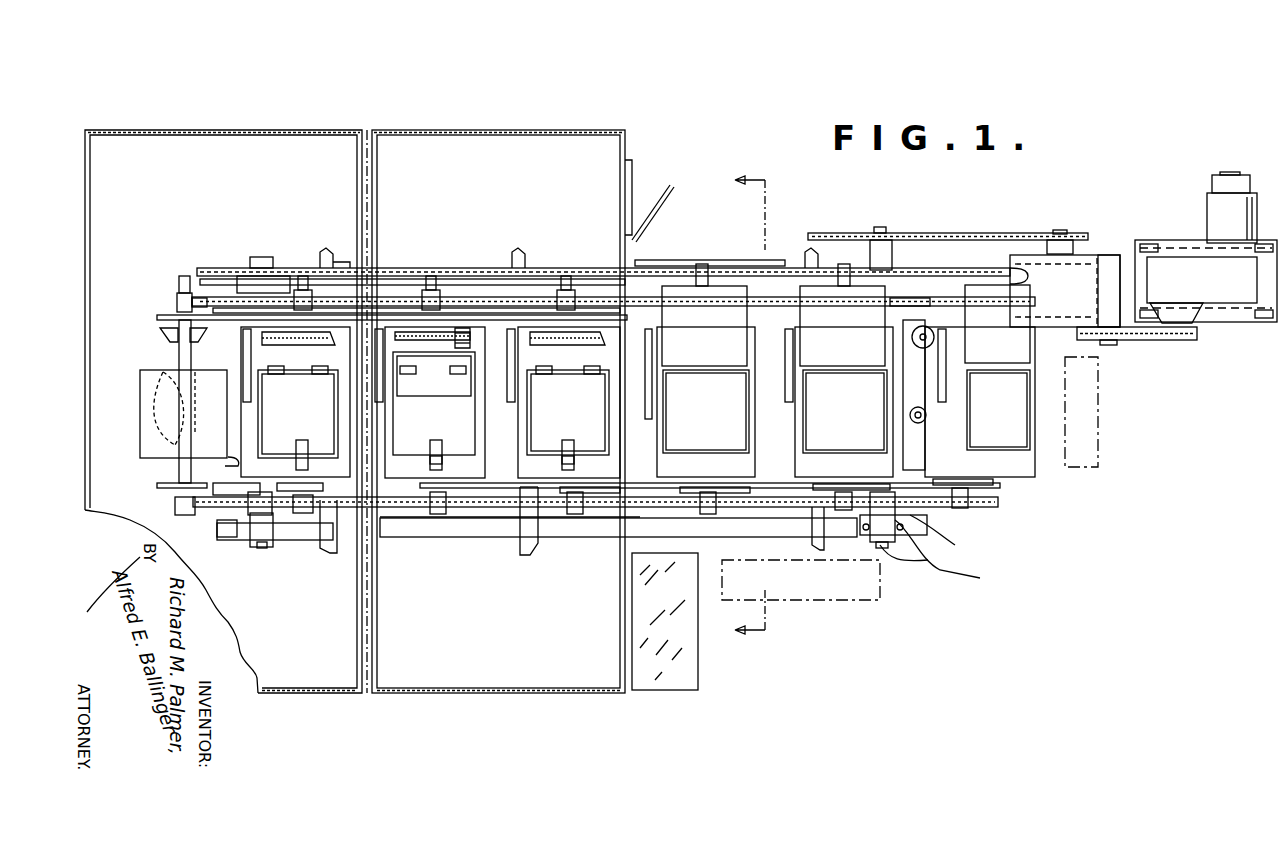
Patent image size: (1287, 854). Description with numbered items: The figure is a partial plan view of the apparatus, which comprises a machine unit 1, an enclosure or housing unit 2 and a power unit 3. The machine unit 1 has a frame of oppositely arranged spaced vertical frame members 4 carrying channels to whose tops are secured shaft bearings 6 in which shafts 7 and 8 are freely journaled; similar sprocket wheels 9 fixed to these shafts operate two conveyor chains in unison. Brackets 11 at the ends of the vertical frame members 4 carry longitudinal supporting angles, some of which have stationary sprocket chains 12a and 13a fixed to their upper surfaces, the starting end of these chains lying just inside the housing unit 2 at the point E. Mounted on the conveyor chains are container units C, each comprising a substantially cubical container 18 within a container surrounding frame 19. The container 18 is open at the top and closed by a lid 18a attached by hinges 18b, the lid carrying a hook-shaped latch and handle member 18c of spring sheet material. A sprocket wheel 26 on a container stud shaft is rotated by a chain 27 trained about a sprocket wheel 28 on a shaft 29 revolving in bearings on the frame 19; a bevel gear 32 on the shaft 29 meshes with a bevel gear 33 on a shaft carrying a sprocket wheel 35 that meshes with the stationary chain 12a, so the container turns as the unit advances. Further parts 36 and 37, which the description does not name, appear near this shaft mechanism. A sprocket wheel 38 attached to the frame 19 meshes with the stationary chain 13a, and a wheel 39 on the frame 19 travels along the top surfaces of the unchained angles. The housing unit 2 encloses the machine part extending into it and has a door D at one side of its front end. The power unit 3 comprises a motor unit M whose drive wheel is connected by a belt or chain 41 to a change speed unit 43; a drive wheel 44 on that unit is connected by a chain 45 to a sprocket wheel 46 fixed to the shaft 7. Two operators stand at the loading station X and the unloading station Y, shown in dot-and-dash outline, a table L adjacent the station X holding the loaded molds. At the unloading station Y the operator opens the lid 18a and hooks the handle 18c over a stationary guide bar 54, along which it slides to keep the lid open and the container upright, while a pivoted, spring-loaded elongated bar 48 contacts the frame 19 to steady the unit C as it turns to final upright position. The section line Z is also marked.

The machine unit 1 is at (890, 205).
The housing unit 2 is at (258, 85).
The power unit 3 is at (1185, 158).
The vertical frame members 4 is at (326, 262).
The shaft bearings 6 is at (870, 530).
The shaft 7 is at (911, 564).
The shaft 8 is at (268, 260).
The sprocket wheels 9 is at (214, 300).
The brackets 11 is at (536, 535).
The sprocket chain 12a is at (445, 272).
The sprocket chain 13a is at (395, 300).
The container 18 is at (140, 436).
The lid 18a is at (644, 371).
The hinges 18b is at (434, 380).
The hook-shaped latch and handle member 18c is at (178, 466).
The container surrounding frame 19 is at (186, 440).
The sprocket wheel 26 is at (914, 424).
The chain 27 is at (510, 368).
The sprocket wheel 28 is at (912, 342).
The shaft 29 is at (282, 345).
The bevel gear 32 is at (460, 346).
The bevel gear 33 is at (162, 332).
The sprocket wheel 35 is at (180, 280).
The bearing block 36 is at (176, 298).
The lower screw shaft 37 is at (175, 506).
The sprocket wheel 38 is at (158, 318).
The wheel 39 is at (158, 486).
The belt or chain 41 is at (1150, 342).
The change speed unit 43 is at (1073, 282).
The drive wheel 44 is at (1062, 241).
The chain 45 is at (1008, 220).
The sprocket wheel 46 is at (925, 228).
The elongated bar 48 is at (952, 552).
The stationary guide bar 54 is at (745, 256).
The container units C is at (130, 352).
The door D is at (628, 168).
The starting end of stationary chains E is at (580, 268).
The table L is at (665, 698).
The motor unit M is at (1192, 272).
The loading station X is at (880, 600).
The unloading station Y is at (1098, 464).
The section line Z is at (731, 408).